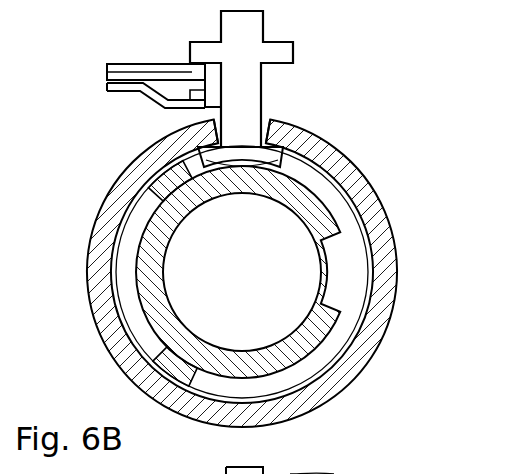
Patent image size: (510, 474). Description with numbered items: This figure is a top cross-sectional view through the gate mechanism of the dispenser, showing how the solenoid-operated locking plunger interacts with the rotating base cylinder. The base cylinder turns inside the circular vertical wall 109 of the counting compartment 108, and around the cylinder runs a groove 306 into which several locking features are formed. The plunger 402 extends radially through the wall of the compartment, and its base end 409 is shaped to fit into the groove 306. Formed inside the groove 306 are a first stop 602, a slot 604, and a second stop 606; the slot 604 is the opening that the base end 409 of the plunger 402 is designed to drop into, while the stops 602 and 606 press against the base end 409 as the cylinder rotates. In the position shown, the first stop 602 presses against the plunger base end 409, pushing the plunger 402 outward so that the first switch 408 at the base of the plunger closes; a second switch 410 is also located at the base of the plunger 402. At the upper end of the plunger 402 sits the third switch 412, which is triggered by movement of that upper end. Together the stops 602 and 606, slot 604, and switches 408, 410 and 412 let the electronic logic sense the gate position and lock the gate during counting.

The counting compartment 108 is at (262, 286).
The circular vertical wall 109 is at (349, 368).
The groove 306 is at (344, 218).
The plunger 402 is at (254, 32).
The first switch 408 is at (192, 150).
The base end of the plunger 409 is at (246, 148).
The second switch 410 is at (338, 152).
The third switch 412 is at (181, 78).
The first stop 602 is at (146, 191).
The slot 604 is at (334, 280).
The second stop 606 is at (174, 368).